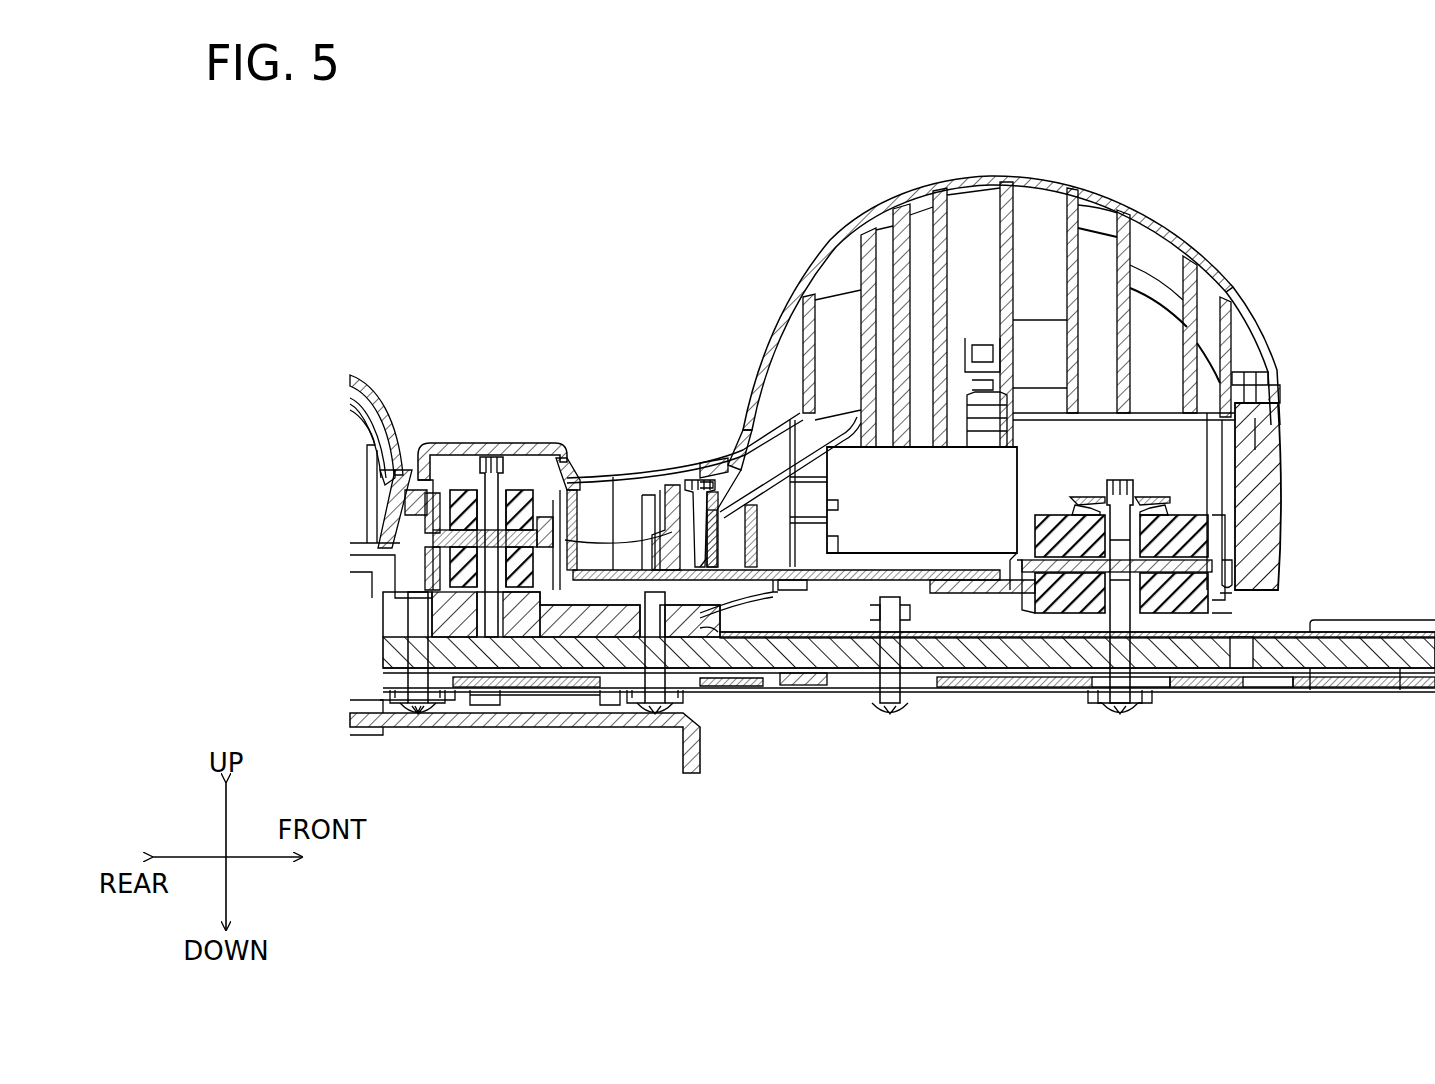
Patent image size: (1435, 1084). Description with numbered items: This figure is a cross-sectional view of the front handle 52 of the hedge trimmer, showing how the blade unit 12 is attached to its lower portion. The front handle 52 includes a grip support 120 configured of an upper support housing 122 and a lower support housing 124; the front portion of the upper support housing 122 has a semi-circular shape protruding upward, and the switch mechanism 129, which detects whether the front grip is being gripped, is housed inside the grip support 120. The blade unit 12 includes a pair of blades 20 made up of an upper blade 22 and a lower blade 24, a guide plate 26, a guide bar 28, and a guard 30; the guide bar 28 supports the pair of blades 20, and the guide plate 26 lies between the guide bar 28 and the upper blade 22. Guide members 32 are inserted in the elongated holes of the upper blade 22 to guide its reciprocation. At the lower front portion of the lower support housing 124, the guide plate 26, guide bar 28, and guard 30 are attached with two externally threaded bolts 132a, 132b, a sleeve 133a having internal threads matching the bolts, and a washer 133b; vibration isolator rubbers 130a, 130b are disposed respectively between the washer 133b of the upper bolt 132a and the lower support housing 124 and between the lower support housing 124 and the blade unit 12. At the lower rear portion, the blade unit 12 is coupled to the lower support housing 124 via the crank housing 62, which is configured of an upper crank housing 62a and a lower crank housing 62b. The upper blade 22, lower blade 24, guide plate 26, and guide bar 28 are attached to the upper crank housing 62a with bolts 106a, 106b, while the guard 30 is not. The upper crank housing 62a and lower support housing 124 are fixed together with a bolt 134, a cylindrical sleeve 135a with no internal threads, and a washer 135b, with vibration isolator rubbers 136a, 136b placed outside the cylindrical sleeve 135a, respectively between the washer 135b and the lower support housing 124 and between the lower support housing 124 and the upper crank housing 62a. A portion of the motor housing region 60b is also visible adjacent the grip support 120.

The front handle 52 is at (1185, 146).
The switch mechanism 129 is at (883, 477).
The upper support housing 122 is at (1210, 262).
The grip support 120 is at (573, 328).
The rear housing portion 60b is at (366, 420).
The bolt 134 is at (500, 458).
The vibration isolator rubber 136a is at (470, 492).
The vibration isolator rubber 136b is at (450, 540).
The washer 135b is at (540, 470).
The cylindrical sleeve 135a is at (552, 538).
The lower support housing 124 is at (590, 546).
The bolt 132a is at (1150, 490).
The washer 133b is at (1180, 500).
The sleeve 133a is at (1145, 522).
The vibration isolator rubber 130a is at (1208, 546).
The vibration isolator rubber 130b is at (1195, 605).
The guard 30 is at (828, 640).
The guide bar 28 is at (855, 650).
The guide plate 26 is at (948, 680).
The lower blade 24 is at (985, 690).
The upper blade 22 is at (1055, 680).
The pair of blades 20 is at (975, 775).
The blade unit 12 is at (1078, 770).
The crank housing 62 is at (527, 770).
The upper crank housing 62a is at (612, 680).
The lower crank housing 62b is at (575, 700).
The guide member 32 is at (440, 690).
The bolt 106a is at (408, 702).
The bolt 106b is at (652, 702).
The bolt 132b is at (1140, 702).